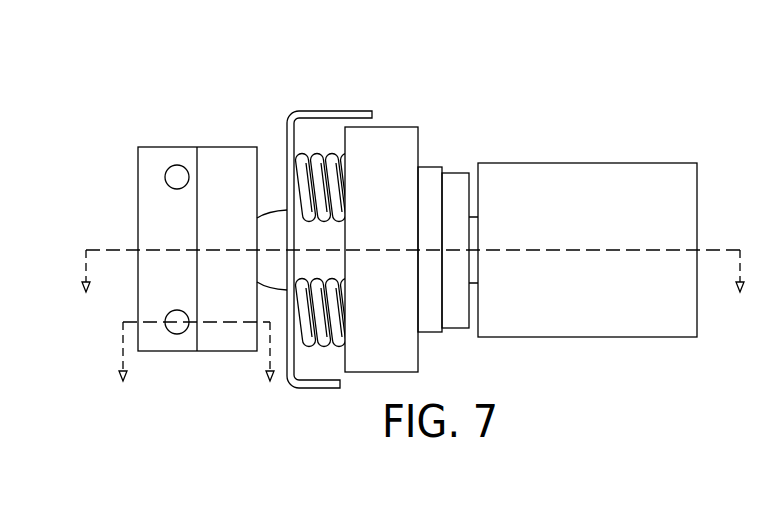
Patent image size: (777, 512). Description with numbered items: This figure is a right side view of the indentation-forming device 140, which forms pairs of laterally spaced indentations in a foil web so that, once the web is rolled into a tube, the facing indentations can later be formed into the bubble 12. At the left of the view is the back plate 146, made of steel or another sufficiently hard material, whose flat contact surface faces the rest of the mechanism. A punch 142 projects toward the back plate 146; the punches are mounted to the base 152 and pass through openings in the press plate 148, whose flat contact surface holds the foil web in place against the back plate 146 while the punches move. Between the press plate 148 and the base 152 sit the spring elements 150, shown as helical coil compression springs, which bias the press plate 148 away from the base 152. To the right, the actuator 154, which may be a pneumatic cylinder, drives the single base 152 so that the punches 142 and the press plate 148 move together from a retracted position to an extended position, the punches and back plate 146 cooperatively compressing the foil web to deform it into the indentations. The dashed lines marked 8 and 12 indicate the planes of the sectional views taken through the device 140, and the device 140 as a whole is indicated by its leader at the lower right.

The indentation-forming device 140 is at (596, 418).
The punch 142 is at (275, 206).
The back plate 146 is at (122, 180).
The press plate 148 is at (292, 110).
The spring element 150 is at (322, 345).
The base 152 is at (420, 112).
The actuator 154 is at (568, 142).
The section line 8- 8 is at (412, 296).
The bubble 12 is at (196, 367).